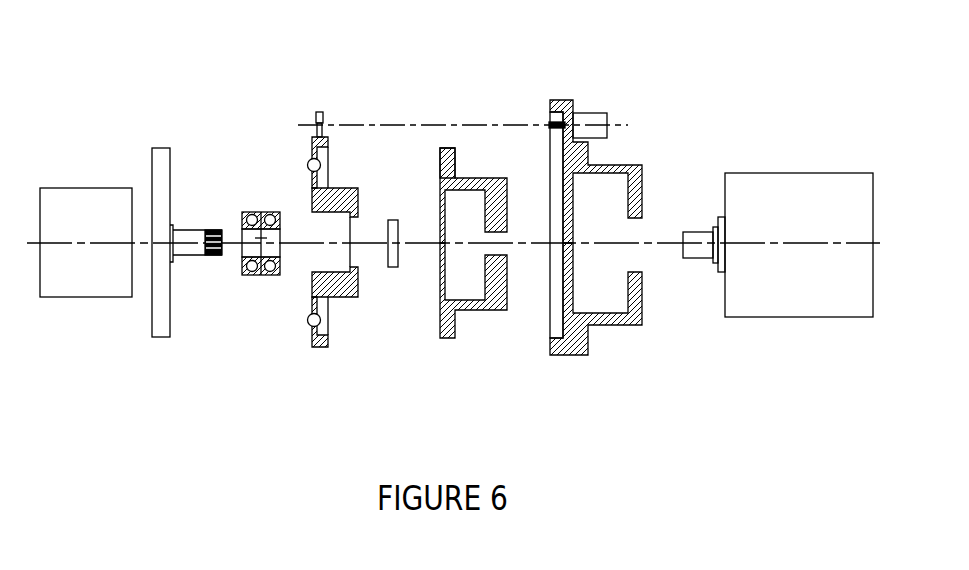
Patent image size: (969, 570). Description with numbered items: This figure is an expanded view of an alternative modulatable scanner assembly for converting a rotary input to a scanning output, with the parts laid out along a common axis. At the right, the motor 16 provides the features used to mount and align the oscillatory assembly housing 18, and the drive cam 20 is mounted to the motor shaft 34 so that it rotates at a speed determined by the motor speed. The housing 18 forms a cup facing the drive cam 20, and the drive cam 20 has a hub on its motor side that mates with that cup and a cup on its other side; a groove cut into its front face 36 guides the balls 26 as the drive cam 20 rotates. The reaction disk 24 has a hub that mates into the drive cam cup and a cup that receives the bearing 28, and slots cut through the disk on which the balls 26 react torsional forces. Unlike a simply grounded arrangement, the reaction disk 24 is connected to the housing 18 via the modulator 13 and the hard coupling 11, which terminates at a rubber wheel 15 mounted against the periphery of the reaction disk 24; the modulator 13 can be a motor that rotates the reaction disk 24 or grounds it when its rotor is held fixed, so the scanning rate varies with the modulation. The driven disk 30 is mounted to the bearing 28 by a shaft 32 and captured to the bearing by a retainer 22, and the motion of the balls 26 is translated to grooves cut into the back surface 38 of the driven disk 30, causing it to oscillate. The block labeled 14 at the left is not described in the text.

The coupling 11 is at (557, 121).
The modulator 13 is at (598, 112).
The drive unit 14 is at (83, 297).
The rubber wheel 15 is at (315, 110).
The motor 16 is at (810, 170).
The oscillatory assembly housing 18 is at (626, 163).
The drive cam 20 is at (477, 177).
The retainer 22 is at (393, 270).
The reaction disk 24 is at (310, 130).
The ball 26 is at (305, 153).
The bearing 28 is at (243, 276).
The driven disk 30 is at (152, 158).
The shaft 32 is at (213, 227).
The motor shaft 34 is at (704, 227).
The front face 36 is at (438, 167).
The back surface 38 is at (170, 158).